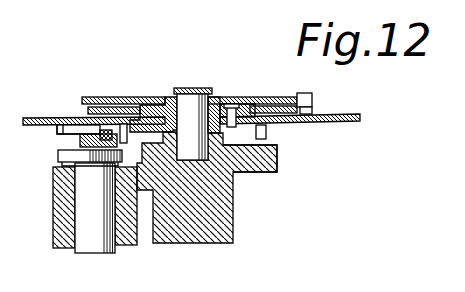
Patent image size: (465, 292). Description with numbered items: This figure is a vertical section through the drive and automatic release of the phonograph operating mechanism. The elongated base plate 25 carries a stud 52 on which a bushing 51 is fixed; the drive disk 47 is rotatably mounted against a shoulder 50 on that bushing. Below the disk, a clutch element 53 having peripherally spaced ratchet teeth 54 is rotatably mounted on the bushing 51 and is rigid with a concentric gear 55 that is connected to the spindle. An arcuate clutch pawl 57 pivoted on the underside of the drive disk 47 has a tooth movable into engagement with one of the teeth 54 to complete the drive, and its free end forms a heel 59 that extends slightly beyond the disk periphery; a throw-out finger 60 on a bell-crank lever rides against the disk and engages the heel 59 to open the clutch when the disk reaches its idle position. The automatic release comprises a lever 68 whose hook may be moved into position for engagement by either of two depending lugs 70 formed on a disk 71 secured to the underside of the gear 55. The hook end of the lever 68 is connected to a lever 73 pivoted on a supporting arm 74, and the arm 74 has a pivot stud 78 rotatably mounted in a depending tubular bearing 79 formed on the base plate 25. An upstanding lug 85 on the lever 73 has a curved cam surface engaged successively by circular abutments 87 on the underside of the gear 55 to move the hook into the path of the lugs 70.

The base plate 25 is at (222, 213).
The drive disk 47 is at (253, 96).
The shoulder 50 is at (187, 88).
The bushing 51 is at (228, 102).
The stud 52 is at (195, 103).
The clutch element 53 is at (153, 106).
The ratchet teeth 54 is at (140, 105).
The gear 55 is at (341, 122).
The clutch pawl 57 is at (285, 97).
The heel 59 is at (313, 104).
The throw-out finger 60 is at (306, 94).
The lever 68 is at (78, 137).
The lugs 70 is at (267, 132).
The disk 71 is at (277, 155).
The lever 73 is at (80, 145).
The supporting arm 74 is at (58, 160).
The pivot stud 78 is at (80, 193).
The tubular bearing 79 is at (53, 218).
The lug 85 is at (67, 128).
The abutments 87 is at (68, 123).